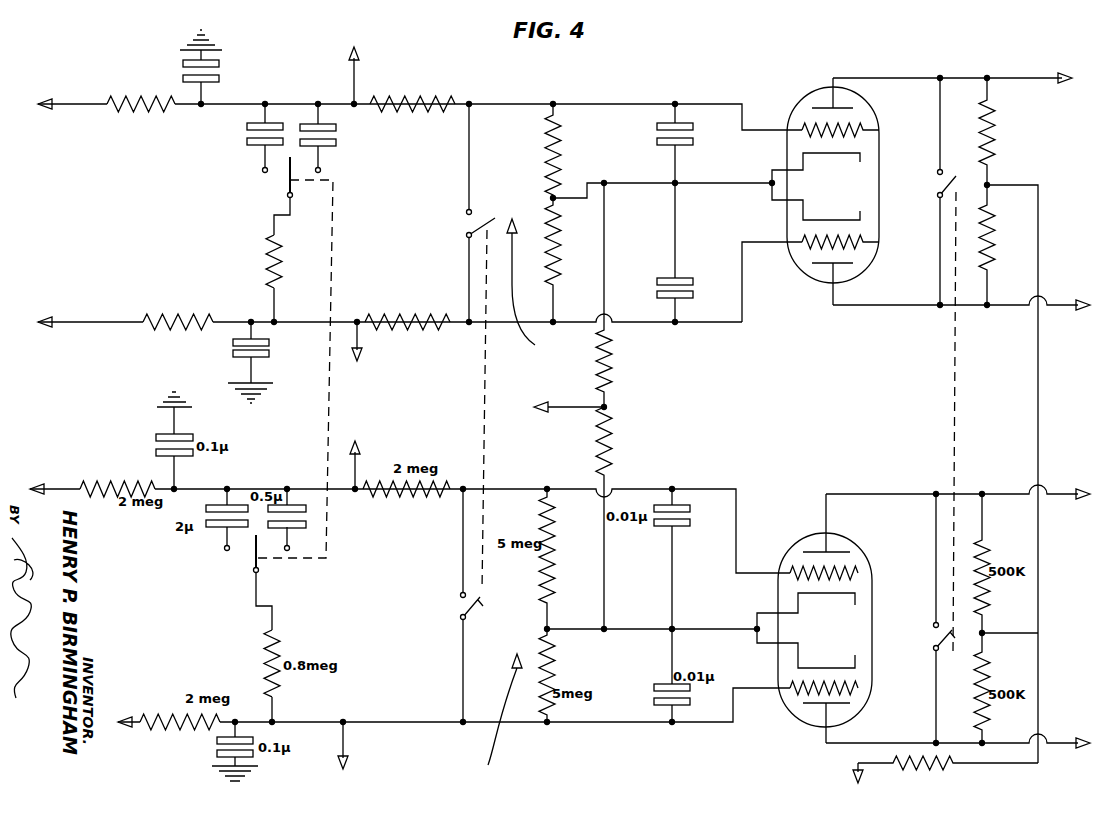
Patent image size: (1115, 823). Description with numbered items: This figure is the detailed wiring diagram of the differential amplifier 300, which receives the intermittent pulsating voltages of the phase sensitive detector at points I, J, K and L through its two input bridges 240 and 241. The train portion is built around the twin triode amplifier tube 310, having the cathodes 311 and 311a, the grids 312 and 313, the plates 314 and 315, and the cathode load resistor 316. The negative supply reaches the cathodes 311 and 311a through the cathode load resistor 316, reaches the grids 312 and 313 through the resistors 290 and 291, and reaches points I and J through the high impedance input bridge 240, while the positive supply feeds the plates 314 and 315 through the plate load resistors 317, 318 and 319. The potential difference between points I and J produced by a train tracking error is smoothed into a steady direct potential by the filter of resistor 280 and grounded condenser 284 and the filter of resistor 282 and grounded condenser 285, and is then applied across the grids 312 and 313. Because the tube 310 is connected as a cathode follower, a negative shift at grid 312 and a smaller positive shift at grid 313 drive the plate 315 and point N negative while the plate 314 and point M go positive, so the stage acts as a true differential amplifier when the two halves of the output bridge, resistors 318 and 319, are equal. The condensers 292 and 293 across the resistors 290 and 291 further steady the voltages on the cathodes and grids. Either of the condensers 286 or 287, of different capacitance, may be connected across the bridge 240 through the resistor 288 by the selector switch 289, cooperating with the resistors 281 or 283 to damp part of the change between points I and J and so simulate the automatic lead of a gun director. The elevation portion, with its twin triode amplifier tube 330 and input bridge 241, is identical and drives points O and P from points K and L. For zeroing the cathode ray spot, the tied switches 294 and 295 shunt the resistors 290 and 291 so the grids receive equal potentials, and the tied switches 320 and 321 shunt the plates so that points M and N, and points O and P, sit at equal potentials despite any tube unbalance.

The amplifier input bridge 240 is at (538, 289).
The input bridge 241 is at (488, 714).
The resistor 280 is at (130, 98).
The resistor 281 is at (412, 98).
The resistor 282 is at (190, 318).
The resistor 283 is at (385, 318).
The condenser 284 is at (222, 78).
The condenser 285 is at (232, 355).
The condenser 286 is at (245, 141).
The condenser 287 is at (337, 146).
The resistor 288 is at (268, 268).
The selector switch 289 is at (288, 185).
The resistor 290 is at (545, 147).
The resistor 291 is at (560, 242).
The condenser 292 is at (660, 142).
The condenser 293 is at (690, 277).
The switch 294 is at (466, 228).
The switch 295 is at (478, 617).
The amplifier 300 is at (558, 410).
The twin triode amplifier tube 310 is at (879, 212).
The cathode 311 is at (860, 153).
The cathode 311a is at (857, 205).
The grid 312 is at (879, 130).
The grid 313 is at (879, 242).
The plate 314 is at (862, 108).
The plate 315 is at (855, 270).
The cathode load resistor 316 is at (612, 390).
The plate load resistor 317 is at (940, 770).
The plate load resistor 318 is at (990, 160).
The plate load resistor 319 is at (1000, 262).
The switch 320 is at (938, 190).
The switch 321 is at (934, 645).
The twin triode amplifier tube 330 is at (872, 620).